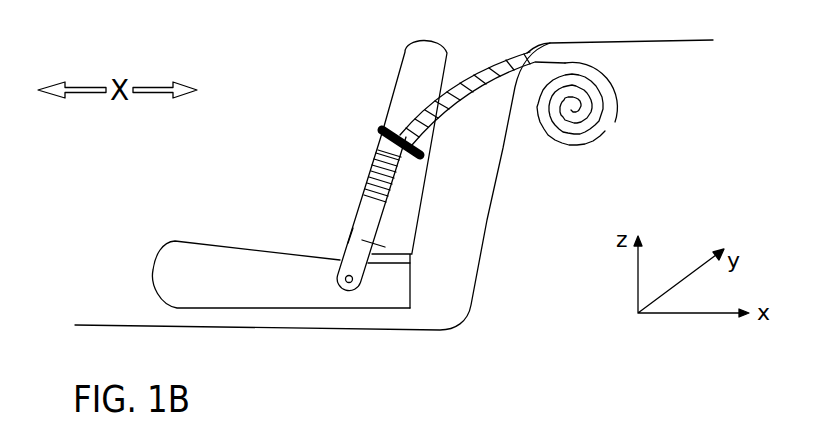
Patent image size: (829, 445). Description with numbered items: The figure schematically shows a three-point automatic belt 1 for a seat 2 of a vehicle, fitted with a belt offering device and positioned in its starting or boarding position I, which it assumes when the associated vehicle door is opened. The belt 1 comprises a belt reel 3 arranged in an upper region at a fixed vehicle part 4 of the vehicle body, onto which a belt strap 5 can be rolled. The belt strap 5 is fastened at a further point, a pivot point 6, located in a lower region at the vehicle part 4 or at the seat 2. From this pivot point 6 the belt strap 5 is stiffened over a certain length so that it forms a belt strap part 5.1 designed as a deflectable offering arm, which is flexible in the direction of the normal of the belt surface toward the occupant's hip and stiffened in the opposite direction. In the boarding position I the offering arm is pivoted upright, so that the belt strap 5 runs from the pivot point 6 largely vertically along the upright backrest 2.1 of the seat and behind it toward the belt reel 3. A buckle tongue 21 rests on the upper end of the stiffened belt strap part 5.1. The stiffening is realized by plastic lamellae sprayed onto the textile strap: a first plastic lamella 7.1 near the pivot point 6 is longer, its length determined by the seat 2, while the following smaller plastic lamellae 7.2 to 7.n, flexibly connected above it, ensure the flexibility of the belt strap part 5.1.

The three-point automatic belt 1 is at (68, 55).
The seat 2 is at (155, 252).
The backrest 2.1 is at (407, 57).
The buckle tongue 21 is at (383, 129).
The belt reel 3 is at (615, 122).
The fixed vehicle part 4 is at (683, 42).
The belt strap 5 is at (468, 84).
The belt strap part 5.1 is at (393, 197).
The pivot point 6 is at (356, 286).
The first plastic lamella 7.1 is at (366, 244).
The plastic lamella 7.2 is at (370, 190).
The plastic lamella 7.n is at (383, 153).
The boarding position I is at (354, 234).